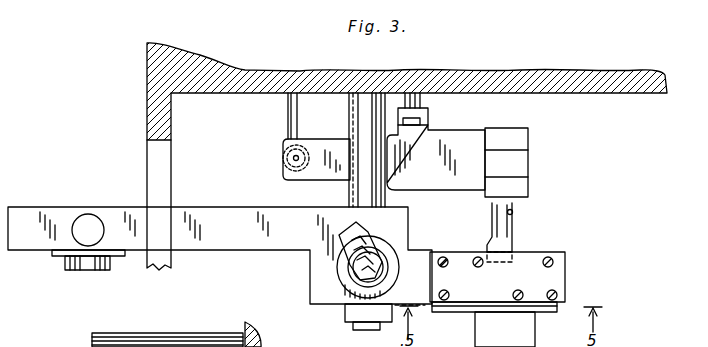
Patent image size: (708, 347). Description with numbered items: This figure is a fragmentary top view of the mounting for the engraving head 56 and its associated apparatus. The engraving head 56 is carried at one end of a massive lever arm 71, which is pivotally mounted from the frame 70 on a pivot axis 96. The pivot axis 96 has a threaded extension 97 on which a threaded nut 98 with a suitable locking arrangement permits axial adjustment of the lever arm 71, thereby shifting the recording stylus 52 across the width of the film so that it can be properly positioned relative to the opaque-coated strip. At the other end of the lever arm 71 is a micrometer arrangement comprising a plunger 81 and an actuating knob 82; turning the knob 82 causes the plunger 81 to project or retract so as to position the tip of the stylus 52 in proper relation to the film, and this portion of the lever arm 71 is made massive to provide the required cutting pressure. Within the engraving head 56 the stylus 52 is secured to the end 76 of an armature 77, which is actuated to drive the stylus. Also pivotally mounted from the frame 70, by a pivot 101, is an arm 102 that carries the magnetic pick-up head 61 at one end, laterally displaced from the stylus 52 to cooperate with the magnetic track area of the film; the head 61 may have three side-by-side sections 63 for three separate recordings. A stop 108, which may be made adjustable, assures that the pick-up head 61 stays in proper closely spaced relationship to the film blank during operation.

The frame 70 is at (150, 68).
The pivot 101 is at (457, 78).
The stop 108 is at (288, 115).
The pivot axis 96 is at (356, 108).
The arm 102 is at (428, 136).
The magnetic pick-up head 61 is at (528, 128).
The side-by-side sections 63 is at (528, 140).
The end of armature 76 is at (492, 226).
The recording stylus 52 is at (512, 213).
The armature 77 is at (510, 250).
The lever arm 71 is at (203, 212).
The plunger 81 is at (90, 225).
The actuating knob 82 is at (82, 272).
The engraving head 56 is at (577, 281).
The threaded nut 98 is at (345, 312).
The threaded extension 97 is at (360, 330).